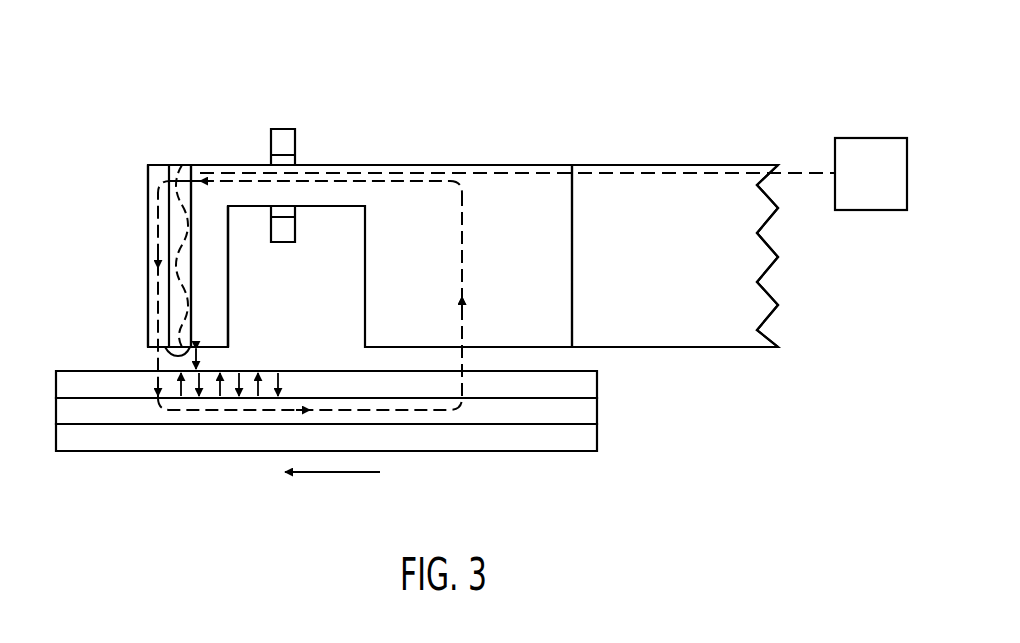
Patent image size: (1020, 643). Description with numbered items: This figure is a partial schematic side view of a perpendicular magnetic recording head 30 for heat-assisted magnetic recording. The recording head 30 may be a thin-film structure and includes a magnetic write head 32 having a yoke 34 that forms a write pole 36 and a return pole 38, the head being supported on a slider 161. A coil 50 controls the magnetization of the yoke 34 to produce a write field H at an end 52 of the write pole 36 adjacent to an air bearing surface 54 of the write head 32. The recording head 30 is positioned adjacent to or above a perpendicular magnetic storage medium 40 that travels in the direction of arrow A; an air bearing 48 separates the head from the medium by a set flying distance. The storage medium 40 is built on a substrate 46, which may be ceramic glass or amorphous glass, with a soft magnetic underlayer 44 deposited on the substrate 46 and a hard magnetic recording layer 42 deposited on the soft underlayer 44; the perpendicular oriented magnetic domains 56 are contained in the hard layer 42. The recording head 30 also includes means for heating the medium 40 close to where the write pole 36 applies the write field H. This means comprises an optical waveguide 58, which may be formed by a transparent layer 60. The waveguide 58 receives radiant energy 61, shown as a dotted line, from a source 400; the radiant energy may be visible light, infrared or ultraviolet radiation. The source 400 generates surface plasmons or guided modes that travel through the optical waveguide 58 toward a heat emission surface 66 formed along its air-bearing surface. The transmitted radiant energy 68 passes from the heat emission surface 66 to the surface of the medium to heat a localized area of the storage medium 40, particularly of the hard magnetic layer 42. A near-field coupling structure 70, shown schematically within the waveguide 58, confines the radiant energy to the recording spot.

The recording head 30 is at (121, 126).
The magnetic write head 32 is at (437, 156).
The yoke 34 is at (386, 172).
The write pole 36 is at (220, 274).
The return pole 38 is at (533, 271).
The perpendicular magnetic storage medium 40 is at (370, 459).
The hard magnetic recording layer 42 is at (598, 385).
The soft magnetic underlayer 44 is at (598, 410).
The substrate 46 is at (598, 443).
The air bearing 48 is at (150, 358).
The coil 50 is at (297, 139).
The end of the write pole 52 is at (232, 346).
The air bearing surface 54 is at (218, 352).
The perpendicular oriented magnetic domains 56 is at (220, 390).
The optical waveguide 58 is at (144, 218).
The transparent layer 60 is at (172, 240).
The radiant energy 61 is at (797, 172).
The heat emission surface 66 is at (172, 348).
The transmitted radiant energy 68 is at (190, 183).
The near-field coupling structure 70 is at (162, 343).
The slider 161 is at (683, 271).
The source 400 is at (893, 190).